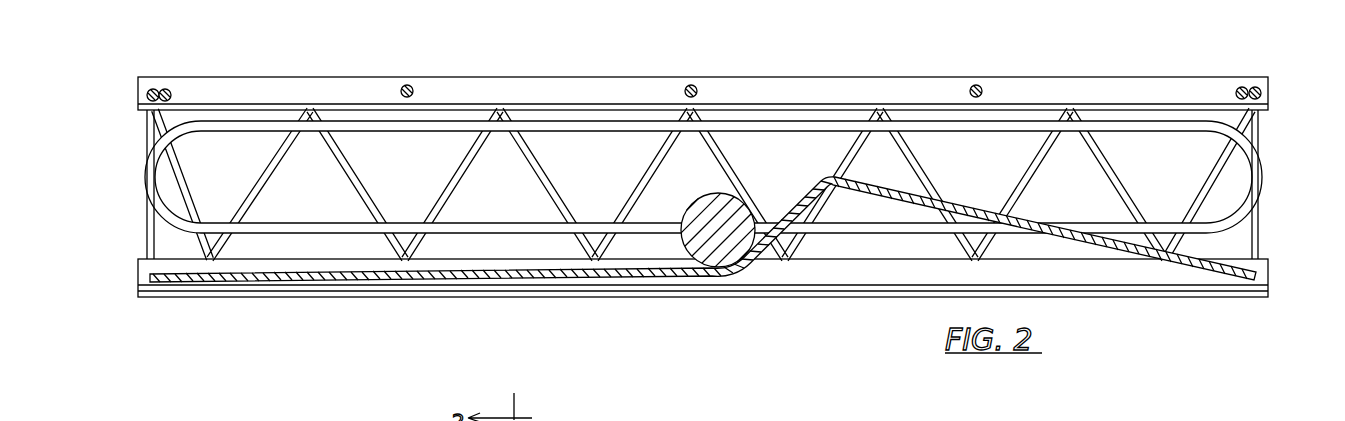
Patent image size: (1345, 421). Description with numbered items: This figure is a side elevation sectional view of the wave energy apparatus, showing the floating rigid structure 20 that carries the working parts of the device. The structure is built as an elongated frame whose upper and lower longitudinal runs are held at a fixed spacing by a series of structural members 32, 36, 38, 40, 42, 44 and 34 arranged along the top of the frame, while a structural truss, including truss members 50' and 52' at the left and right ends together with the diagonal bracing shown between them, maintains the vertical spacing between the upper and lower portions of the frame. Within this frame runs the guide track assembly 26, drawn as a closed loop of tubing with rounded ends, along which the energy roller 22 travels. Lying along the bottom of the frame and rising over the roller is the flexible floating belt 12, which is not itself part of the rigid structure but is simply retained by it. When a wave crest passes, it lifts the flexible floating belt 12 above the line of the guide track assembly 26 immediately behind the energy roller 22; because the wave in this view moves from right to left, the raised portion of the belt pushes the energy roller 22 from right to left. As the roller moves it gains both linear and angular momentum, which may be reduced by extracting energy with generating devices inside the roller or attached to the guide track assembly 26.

The floating rigid structure 20 is at (818, 63).
The flexible floating belt 12 is at (607, 278).
The energy roller 22 is at (713, 243).
The guide track assembly 26 is at (848, 228).
The structural member 32 is at (153, 88).
The structural member 34 is at (1258, 87).
The structural member 36 is at (168, 88).
The structural member 38 is at (410, 86).
The structural member 40 is at (693, 86).
The structural member 42 is at (978, 86).
The structural member 44 is at (1240, 88).
The truss member 50' is at (120, 184).
The truss member 52' is at (1286, 184).